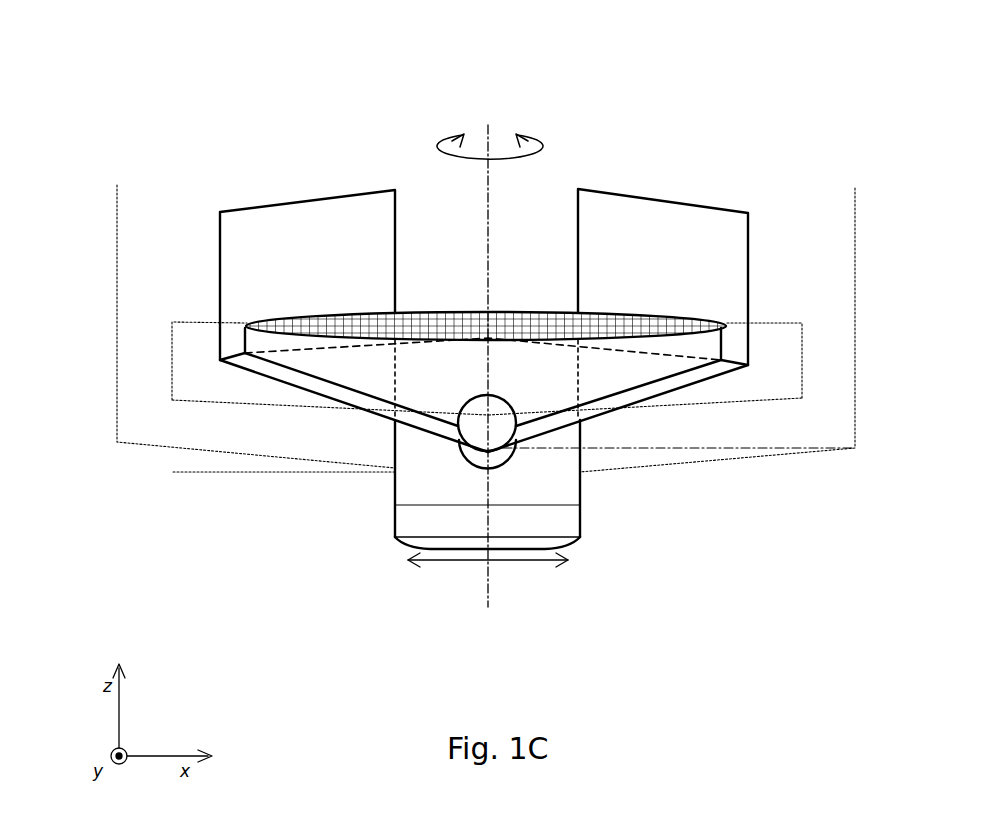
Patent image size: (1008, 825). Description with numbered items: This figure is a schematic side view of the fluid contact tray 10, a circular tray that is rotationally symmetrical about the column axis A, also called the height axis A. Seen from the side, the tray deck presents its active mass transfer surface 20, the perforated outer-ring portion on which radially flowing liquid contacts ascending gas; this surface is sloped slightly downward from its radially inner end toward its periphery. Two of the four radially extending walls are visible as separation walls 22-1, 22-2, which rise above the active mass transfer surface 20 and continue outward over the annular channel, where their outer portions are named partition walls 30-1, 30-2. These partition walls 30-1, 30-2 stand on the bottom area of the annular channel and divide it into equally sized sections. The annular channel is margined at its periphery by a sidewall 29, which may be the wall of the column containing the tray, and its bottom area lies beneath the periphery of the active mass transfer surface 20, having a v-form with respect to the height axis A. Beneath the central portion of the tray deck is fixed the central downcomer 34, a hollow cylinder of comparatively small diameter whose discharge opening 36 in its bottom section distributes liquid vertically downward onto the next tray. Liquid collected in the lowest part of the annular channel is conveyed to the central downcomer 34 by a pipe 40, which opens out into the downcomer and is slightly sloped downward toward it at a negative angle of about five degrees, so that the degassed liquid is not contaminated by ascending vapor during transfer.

The fluid contact tray 10 is at (206, 86).
The active mass transfer surface 20 is at (418, 318).
The separation wall 22-1 is at (257, 266).
The separation wall 22-2 is at (725, 262).
The sidewall 29 is at (117, 294).
The partition wall 30-1 is at (233, 338).
The partition wall 30-2 is at (732, 358).
The central downcomer 34 is at (580, 493).
The discharge opening 36 is at (540, 558).
The pipe 40 is at (480, 456).
The column axis A is at (488, 130).